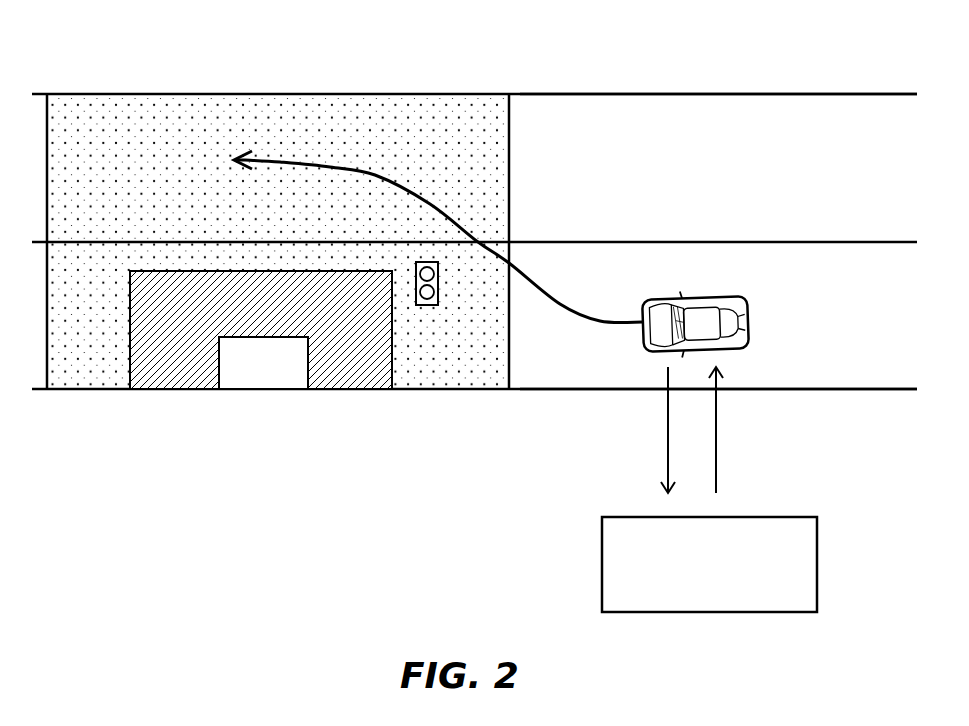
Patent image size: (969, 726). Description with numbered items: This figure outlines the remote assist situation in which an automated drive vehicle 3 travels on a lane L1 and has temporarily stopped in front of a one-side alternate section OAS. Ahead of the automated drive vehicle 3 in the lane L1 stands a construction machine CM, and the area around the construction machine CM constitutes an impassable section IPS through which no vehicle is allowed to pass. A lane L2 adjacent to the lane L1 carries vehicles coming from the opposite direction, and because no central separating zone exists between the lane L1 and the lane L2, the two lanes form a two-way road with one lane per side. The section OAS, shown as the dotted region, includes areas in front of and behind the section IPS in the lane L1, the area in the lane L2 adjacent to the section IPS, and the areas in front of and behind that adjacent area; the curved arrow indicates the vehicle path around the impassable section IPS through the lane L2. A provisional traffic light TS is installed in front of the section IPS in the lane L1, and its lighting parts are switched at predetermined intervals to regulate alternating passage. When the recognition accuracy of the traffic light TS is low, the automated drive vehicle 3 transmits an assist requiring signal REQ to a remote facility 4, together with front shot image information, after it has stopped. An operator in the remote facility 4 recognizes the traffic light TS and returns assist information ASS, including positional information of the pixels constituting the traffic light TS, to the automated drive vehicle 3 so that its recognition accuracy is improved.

The one-side alternate section OAS is at (160, 118).
The impassable section IPS is at (168, 365).
The construction machine CM is at (265, 367).
The traffic light TS is at (427, 305).
The lane L1 is at (533, 367).
The lane L2 is at (547, 132).
The automated drive vehicle 3 is at (733, 345).
The remote facility 4 is at (817, 562).
The assist requiring signal REQ is at (637, 430).
The assist information ASS is at (741, 430).